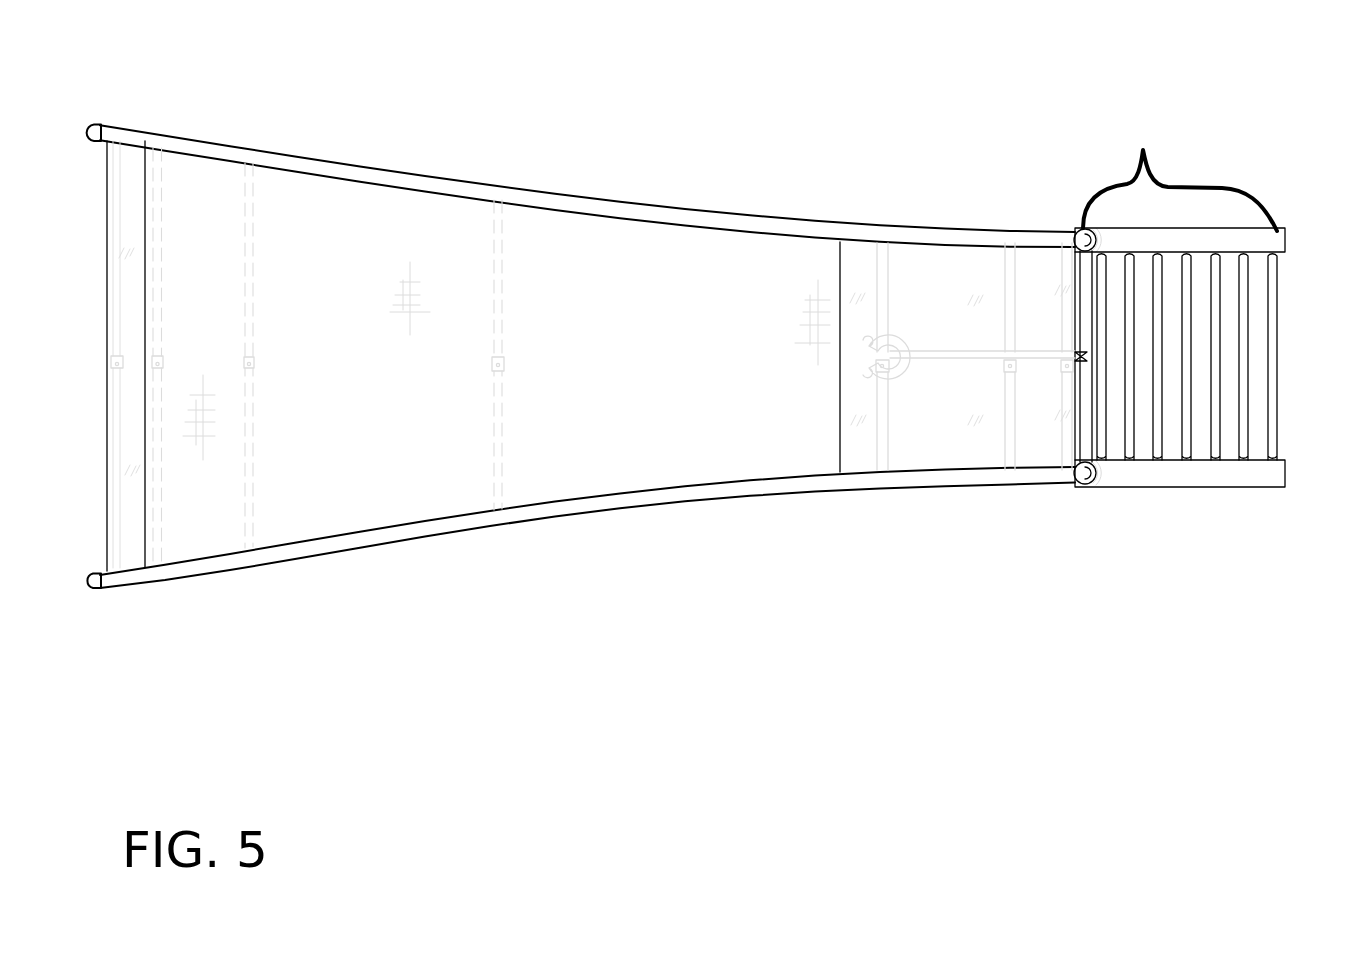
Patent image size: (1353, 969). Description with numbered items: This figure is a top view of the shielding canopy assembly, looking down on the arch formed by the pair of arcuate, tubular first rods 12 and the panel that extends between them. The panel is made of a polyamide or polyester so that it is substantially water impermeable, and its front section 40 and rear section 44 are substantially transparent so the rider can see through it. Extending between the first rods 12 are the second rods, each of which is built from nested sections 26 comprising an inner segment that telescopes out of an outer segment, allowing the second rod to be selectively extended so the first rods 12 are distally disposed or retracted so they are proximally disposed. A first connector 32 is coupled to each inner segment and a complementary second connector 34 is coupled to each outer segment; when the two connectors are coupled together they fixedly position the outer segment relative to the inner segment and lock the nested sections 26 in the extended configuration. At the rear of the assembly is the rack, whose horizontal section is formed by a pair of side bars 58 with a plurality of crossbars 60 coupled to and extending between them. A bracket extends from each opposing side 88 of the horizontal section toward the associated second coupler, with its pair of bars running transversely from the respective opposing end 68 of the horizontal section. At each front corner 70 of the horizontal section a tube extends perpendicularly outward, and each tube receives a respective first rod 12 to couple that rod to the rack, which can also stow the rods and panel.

The first rod 12 is at (595, 508).
The nested sections 26 is at (250, 447).
The first connector 32 is at (155, 382).
The second connector 34 is at (160, 357).
The front section 40 is at (403, 278).
The rear section 44 is at (962, 287).
The side bar 58 is at (1132, 243).
The crossbar 60 is at (1213, 367).
The opposing end 68 is at (1143, 150).
The front corner 70 is at (1100, 335).
The opposing side 88 is at (1195, 243).